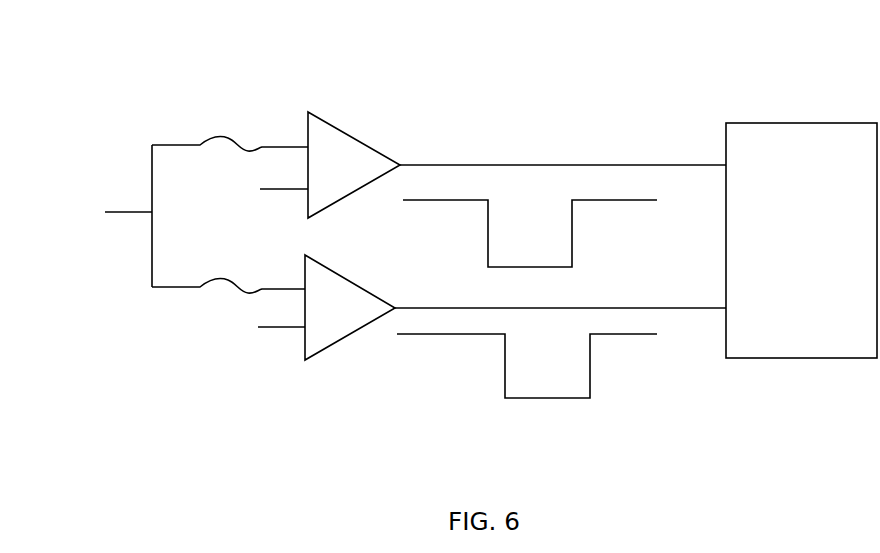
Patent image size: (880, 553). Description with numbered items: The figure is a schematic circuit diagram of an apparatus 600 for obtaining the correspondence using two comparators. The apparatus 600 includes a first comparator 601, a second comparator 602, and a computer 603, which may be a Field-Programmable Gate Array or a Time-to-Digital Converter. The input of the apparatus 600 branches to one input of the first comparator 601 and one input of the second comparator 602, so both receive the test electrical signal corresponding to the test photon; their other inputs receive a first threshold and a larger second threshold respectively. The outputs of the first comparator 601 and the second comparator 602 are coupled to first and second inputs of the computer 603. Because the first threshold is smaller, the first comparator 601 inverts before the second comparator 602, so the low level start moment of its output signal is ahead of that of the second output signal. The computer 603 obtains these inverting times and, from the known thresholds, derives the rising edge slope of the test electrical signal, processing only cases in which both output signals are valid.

The apparatus 600 is at (233, 108).
The first comparator 601 is at (493, 165).
The second comparator 602 is at (492, 307).
The computer 603 is at (801, 240).